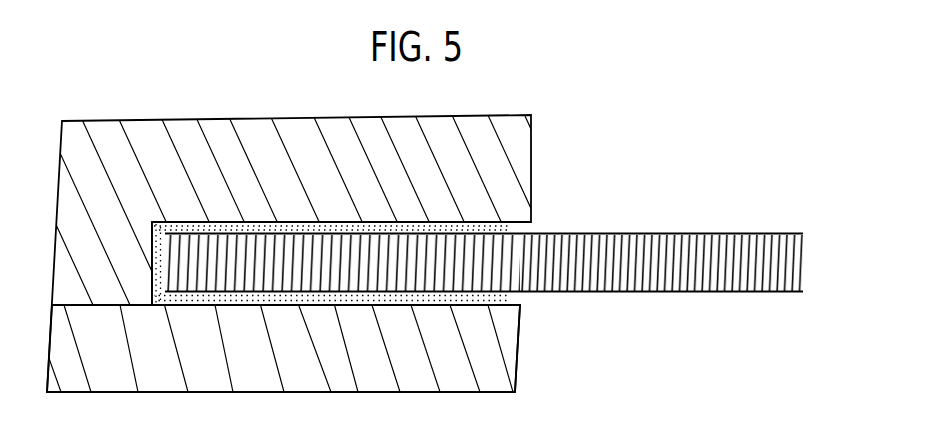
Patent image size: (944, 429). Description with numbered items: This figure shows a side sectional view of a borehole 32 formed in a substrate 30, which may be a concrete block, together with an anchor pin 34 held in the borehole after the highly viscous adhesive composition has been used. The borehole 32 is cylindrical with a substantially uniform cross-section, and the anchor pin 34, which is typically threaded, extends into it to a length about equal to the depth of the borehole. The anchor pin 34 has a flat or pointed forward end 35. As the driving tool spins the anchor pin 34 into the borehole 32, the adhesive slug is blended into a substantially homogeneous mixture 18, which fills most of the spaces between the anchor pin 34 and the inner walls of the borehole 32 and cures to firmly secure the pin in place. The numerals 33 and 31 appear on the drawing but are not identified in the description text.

The substrate 30 is at (513, 130).
The homogeneous mixture 18 is at (377, 305).
The borehole 32 is at (513, 228).
The adhesive layer 33 is at (153, 245).
The forward end 35 is at (152, 262).
The slot opening edge 31 is at (517, 298).
The anchor pin 34 is at (643, 293).